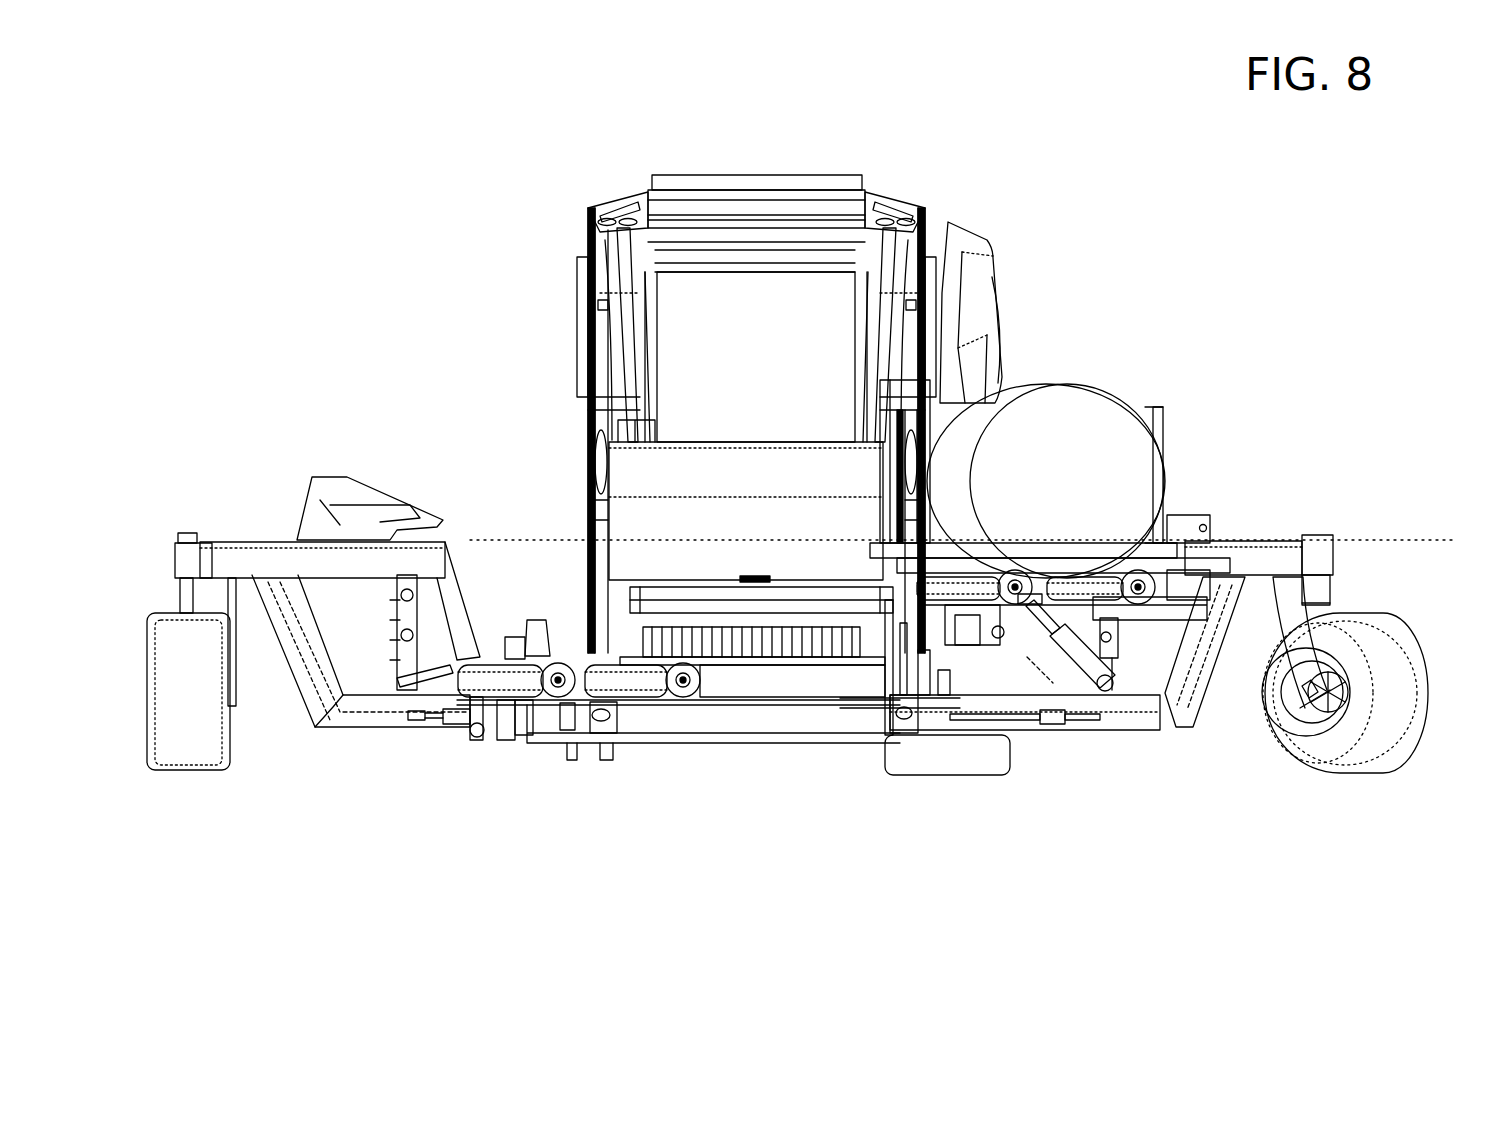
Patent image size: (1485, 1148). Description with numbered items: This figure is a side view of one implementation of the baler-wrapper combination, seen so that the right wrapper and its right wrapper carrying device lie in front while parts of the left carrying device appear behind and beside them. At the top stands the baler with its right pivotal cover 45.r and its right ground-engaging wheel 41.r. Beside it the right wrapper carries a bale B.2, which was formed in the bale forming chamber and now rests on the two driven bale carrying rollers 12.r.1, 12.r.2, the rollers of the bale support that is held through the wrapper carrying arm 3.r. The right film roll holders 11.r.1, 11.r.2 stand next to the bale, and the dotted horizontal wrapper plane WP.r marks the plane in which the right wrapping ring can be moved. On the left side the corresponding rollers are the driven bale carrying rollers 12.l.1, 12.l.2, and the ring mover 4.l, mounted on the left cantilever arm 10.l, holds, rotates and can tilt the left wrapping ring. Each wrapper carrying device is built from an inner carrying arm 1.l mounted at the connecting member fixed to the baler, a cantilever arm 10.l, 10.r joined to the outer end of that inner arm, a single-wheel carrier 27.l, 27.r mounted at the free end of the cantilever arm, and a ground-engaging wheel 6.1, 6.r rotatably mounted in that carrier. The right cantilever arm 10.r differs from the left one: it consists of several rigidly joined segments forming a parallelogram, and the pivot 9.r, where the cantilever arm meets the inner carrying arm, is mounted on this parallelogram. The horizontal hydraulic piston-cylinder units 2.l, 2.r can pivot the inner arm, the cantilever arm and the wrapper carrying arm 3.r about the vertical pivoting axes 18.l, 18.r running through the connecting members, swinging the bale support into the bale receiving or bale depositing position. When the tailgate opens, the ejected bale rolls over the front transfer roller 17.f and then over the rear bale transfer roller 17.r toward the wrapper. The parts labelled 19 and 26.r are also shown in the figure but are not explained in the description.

The right pivotal cover 45.r is at (978, 268).
The ring mover 4.l is at (350, 490).
The cantilever arm 10.l is at (248, 557).
The single-wheel carrier 27.l is at (203, 593).
The front transfer roller 17.f is at (717, 665).
The film roll holder 11.r.2 is at (880, 407).
The bale B.2 is at (1075, 427).
The film roll holder 11.r.1 is at (1163, 430).
The driven bale carrying roller 12.r.2 is at (1138, 580).
The horizontal wrapper plane WP.r is at (1355, 542).
The pivot 9.r is at (1098, 652).
The horizontal hydraulic piston-cylinder unit 2.r is at (1022, 630).
The wrapper carrying arm 3.r is at (1055, 717).
The right ground-engaging wheel 41.r is at (998, 762).
The vertical pivoting axis 18.r is at (955, 613).
The single-wheel carrier 27.r is at (1322, 593).
The cantilever arm 10.r is at (1133, 708).
The ground-engaging wheel 6.r is at (1372, 750).
The driven bale carrying roller 12.r.1 is at (958, 587).
The conveyor frame 19 is at (738, 682).
The right support post 26.r is at (908, 668).
The rear bale transfer roller 17.r is at (747, 722).
The driven bale carrying roller 12.l.2 is at (640, 677).
The vertical pivoting axis 18.l is at (575, 735).
The driven bale carrying roller 12.l.1 is at (503, 680).
The horizontal hydraulic piston-cylinder unit 2.l is at (440, 717).
The inner carrying arm 1.l is at (307, 640).
The ground-engaging wheel 6.1 is at (172, 727).